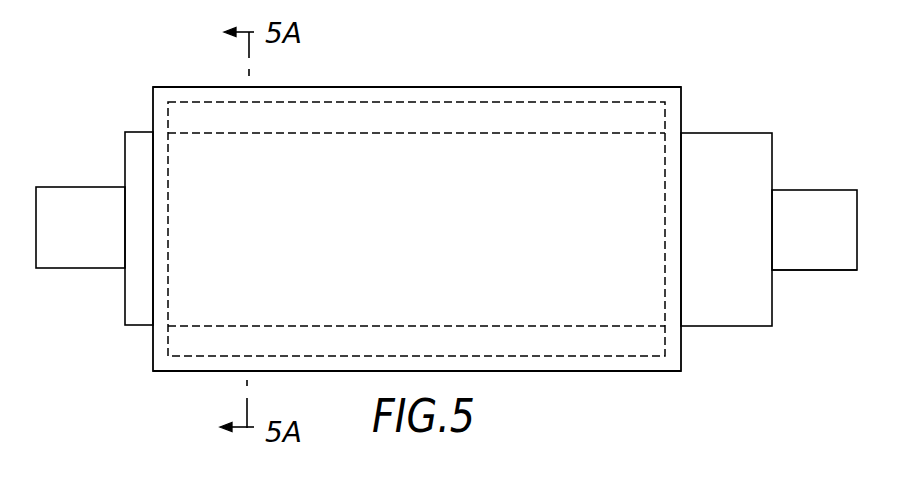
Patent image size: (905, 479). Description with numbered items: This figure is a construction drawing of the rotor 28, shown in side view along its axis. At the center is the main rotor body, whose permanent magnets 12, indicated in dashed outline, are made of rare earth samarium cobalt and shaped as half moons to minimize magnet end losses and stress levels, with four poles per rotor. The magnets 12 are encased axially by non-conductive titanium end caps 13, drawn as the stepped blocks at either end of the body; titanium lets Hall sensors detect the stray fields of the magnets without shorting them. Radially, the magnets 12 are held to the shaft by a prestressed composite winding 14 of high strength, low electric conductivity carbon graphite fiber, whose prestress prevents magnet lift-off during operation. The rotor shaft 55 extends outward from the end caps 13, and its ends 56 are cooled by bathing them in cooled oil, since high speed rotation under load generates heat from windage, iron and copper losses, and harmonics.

The permanent magnets 12 is at (477, 112).
The titanium end caps 13 is at (153, 110).
The prestressed composite winding 14 is at (347, 87).
The rotor 28 is at (421, 235).
The rotor shaft 55 is at (795, 200).
The ends of the shaft 56 is at (807, 249).